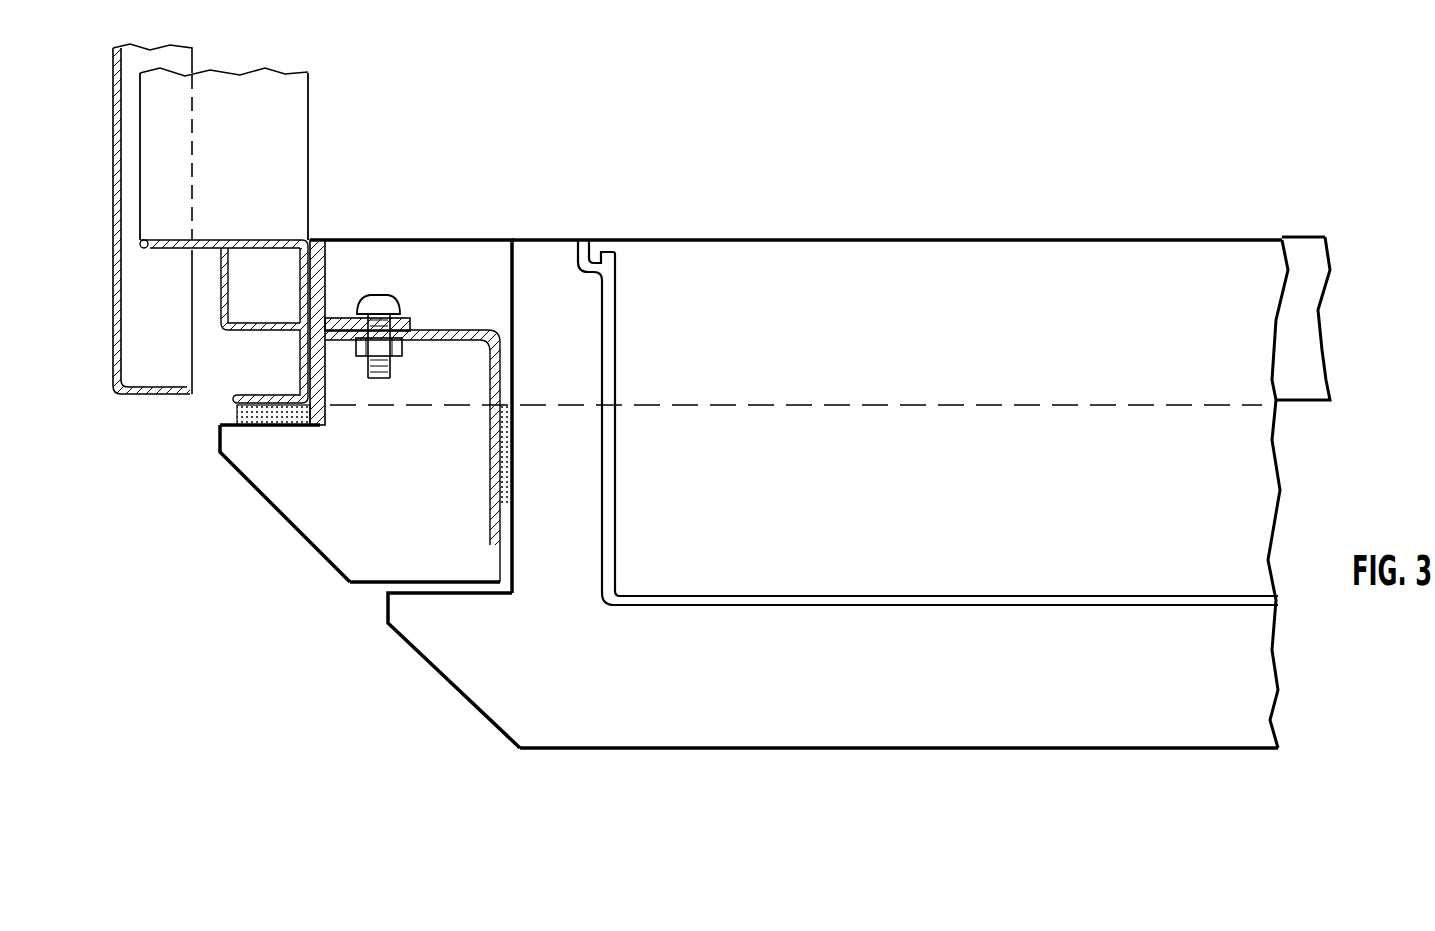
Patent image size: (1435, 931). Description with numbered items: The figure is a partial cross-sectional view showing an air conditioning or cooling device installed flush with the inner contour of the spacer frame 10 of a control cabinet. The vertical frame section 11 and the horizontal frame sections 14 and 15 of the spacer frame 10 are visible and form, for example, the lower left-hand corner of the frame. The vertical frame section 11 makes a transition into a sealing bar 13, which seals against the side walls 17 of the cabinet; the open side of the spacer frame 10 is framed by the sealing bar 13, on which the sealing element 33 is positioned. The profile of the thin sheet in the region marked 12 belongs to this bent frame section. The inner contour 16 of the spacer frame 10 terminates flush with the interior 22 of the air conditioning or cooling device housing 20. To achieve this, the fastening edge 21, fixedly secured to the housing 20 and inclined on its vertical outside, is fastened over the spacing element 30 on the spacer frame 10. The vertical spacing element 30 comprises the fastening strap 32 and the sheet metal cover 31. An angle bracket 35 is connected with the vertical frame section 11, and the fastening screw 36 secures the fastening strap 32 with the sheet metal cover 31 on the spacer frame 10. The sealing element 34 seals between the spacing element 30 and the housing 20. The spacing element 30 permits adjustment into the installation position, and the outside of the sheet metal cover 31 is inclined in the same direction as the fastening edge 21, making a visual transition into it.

The spacer frame 10 is at (375, 183).
The vertical frame section 11 is at (237, 328).
The sheet metal end wall 12 is at (236, 403).
The sealing bar 13 is at (158, 238).
The horizontal frame section 14 is at (292, 124).
The horizontal frame section 15 is at (455, 252).
The inner contour 16 is at (382, 232).
The side wall 17 is at (112, 267).
The air conditioning or cooling device housing 20 is at (917, 749).
The fastening edge 21 is at (453, 632).
The interior 22 is at (898, 230).
The spacing element 30 is at (315, 520).
The sheet metal cover 31 is at (245, 490).
The fastening strap 32 is at (467, 333).
The sealing element 33 is at (298, 427).
The sealing element 34 is at (490, 466).
The angle bracket 35 is at (318, 285).
The fastening screw 36 is at (400, 306).